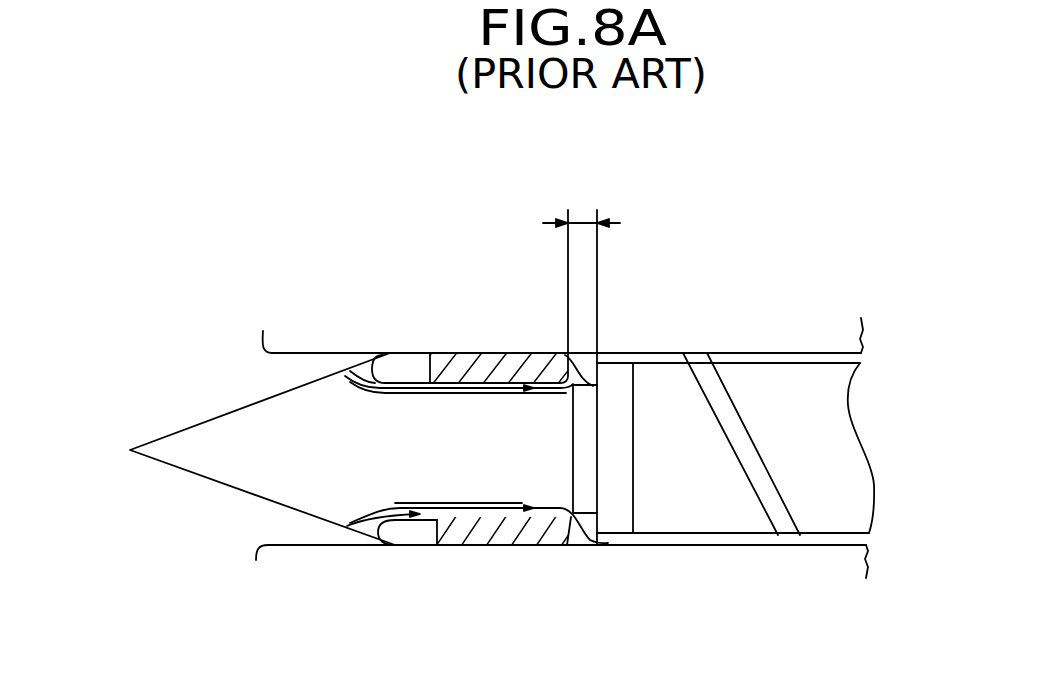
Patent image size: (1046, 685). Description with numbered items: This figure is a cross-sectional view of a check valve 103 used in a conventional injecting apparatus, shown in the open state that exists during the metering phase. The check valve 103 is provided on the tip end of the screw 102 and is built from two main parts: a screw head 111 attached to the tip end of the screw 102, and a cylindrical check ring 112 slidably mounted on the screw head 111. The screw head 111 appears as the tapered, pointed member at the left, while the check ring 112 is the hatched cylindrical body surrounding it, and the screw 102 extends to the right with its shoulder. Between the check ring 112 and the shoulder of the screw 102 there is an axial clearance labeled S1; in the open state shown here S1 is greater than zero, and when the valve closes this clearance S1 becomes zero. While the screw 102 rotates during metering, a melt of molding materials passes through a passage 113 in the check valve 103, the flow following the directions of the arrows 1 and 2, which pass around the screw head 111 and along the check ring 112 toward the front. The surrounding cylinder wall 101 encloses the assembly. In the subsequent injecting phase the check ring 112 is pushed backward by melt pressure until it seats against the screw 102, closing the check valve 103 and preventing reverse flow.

The outer cylinder (syringe barrel) 101 is at (277, 545).
The screw 102 is at (795, 363).
The check valve 103 is at (427, 203).
The screw head 111 is at (208, 421).
The check ring 112 is at (457, 347).
The passage 113 is at (482, 508).
The gap S1 is at (605, 278).
The arrow 1 is at (585, 355).
The arrow 2 is at (350, 371).